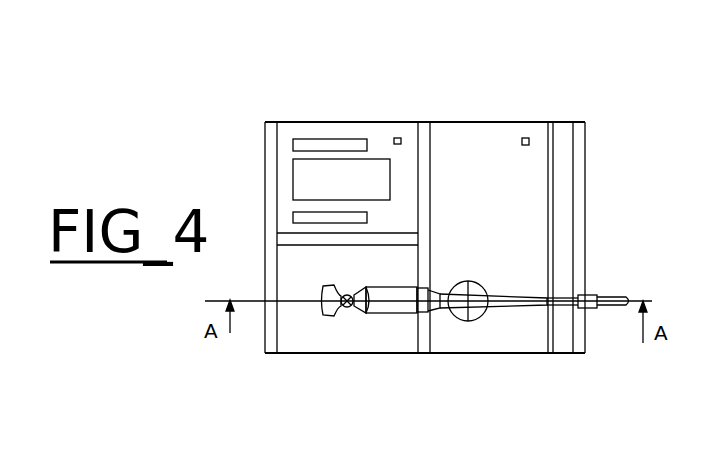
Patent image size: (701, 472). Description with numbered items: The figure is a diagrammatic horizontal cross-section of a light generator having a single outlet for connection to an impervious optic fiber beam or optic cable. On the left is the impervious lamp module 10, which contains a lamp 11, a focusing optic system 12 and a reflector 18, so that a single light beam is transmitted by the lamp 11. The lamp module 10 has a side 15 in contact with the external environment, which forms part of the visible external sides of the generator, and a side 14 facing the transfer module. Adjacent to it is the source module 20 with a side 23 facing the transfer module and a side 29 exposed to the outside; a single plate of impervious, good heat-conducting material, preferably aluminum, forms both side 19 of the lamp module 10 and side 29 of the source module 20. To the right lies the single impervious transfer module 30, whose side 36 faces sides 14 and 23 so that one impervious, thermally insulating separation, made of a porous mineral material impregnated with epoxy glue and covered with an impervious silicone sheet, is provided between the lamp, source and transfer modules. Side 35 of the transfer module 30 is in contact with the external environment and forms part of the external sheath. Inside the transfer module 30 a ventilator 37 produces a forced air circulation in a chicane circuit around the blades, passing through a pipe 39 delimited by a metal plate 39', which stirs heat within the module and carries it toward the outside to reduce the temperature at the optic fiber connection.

The lamp module 10 is at (349, 360).
The lamp 11 is at (350, 307).
The focusing optic system 12 is at (366, 310).
The side of the lamp module 14 is at (412, 325).
The side in contact with the external environment 15 is at (322, 353).
The reflector 18 is at (325, 312).
The side of the lamp module 19 is at (270, 335).
The source module 20 is at (341, 119).
The side of the source module 23 is at (419, 148).
The side of the source module 29 is at (273, 150).
The transfer module 30 is at (485, 116).
The side of the transfer module 35 is at (577, 227).
The side of the transfer module 36 is at (430, 177).
The ventilator 37 is at (480, 320).
The pipe 39 is at (605, 237).
The metal plate 39' is at (593, 205).